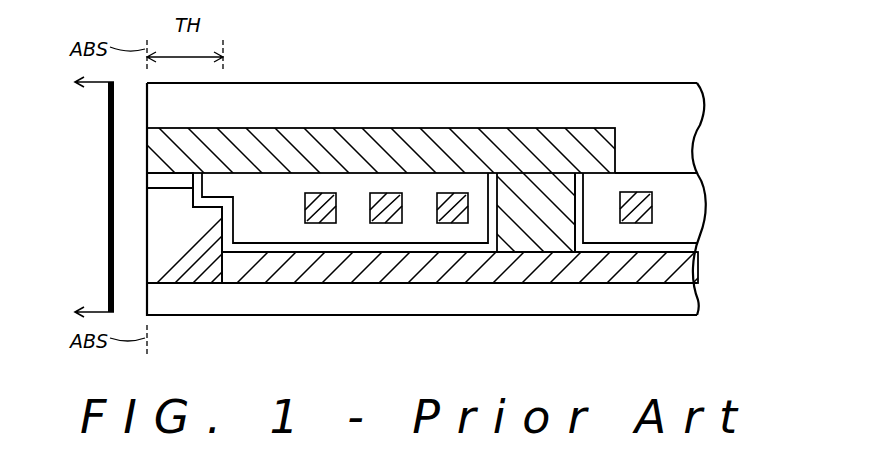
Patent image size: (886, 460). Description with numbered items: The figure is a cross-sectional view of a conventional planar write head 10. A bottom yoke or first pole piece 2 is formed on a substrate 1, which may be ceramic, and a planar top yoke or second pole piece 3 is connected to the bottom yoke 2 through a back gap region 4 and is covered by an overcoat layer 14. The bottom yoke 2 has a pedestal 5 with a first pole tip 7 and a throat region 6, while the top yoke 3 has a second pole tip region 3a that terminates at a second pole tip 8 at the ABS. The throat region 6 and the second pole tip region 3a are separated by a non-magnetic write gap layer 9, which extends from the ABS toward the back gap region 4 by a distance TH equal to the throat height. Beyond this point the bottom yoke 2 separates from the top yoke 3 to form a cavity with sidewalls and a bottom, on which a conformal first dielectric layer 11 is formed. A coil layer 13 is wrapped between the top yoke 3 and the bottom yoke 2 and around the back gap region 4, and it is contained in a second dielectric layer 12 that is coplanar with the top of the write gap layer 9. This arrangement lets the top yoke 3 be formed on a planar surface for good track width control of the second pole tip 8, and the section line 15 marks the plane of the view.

The substrate 1 is at (688, 298).
The bottom yoke 2 is at (496, 293).
The top yoke 3 is at (467, 150).
The second pole tip region 3a is at (265, 152).
The back gap region 4 is at (547, 240).
The pedestal 5 is at (208, 240).
The throat region 6 is at (188, 212).
The first pole tip 7 is at (182, 197).
The second pole tip 8 is at (160, 150).
The write gap layer 9 is at (160, 179).
The planar write head 10 is at (704, 93).
The first dielectric layer 11 is at (356, 250).
The second dielectric layer 12 is at (278, 228).
The coil layer 13 is at (320, 210).
The overcoat layer 14 is at (677, 122).
The section line 15 is at (77, 200).